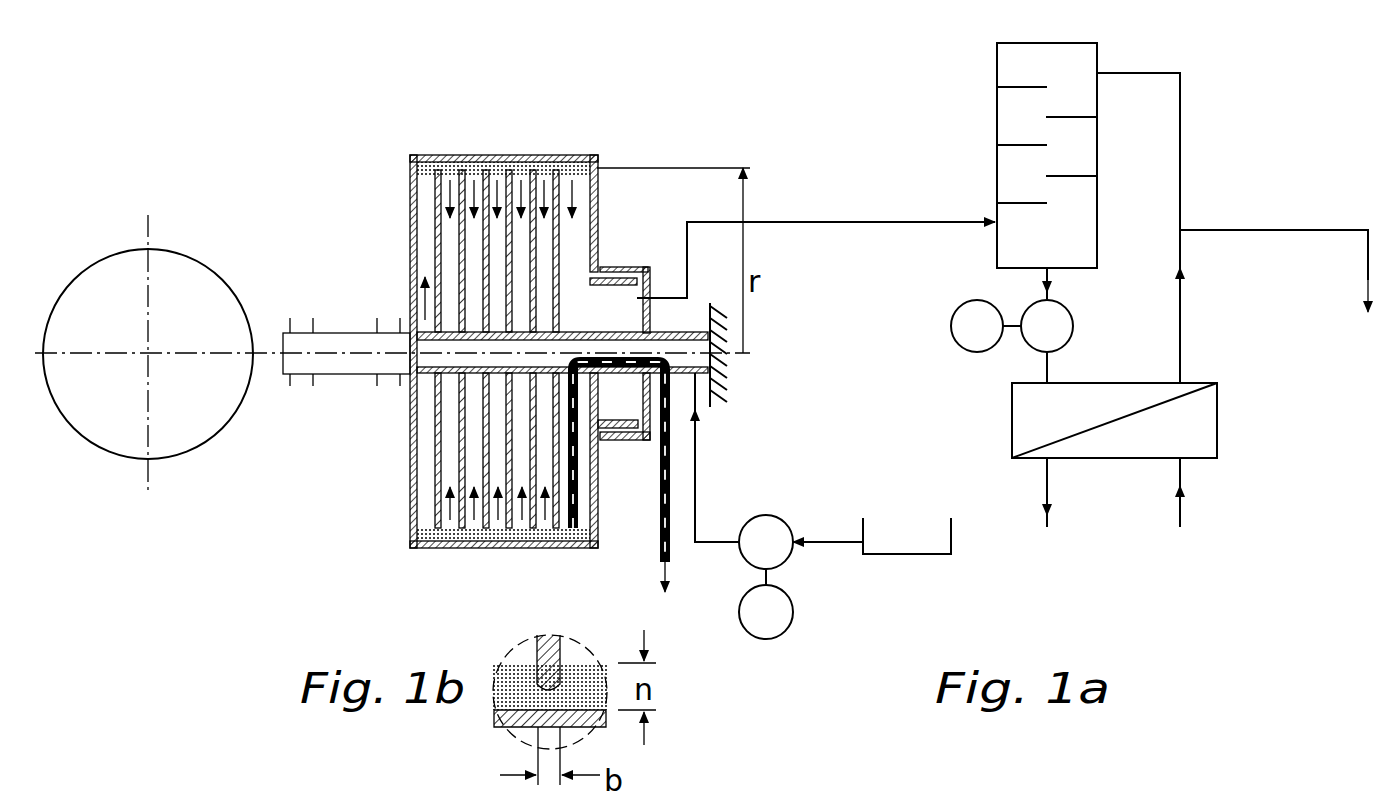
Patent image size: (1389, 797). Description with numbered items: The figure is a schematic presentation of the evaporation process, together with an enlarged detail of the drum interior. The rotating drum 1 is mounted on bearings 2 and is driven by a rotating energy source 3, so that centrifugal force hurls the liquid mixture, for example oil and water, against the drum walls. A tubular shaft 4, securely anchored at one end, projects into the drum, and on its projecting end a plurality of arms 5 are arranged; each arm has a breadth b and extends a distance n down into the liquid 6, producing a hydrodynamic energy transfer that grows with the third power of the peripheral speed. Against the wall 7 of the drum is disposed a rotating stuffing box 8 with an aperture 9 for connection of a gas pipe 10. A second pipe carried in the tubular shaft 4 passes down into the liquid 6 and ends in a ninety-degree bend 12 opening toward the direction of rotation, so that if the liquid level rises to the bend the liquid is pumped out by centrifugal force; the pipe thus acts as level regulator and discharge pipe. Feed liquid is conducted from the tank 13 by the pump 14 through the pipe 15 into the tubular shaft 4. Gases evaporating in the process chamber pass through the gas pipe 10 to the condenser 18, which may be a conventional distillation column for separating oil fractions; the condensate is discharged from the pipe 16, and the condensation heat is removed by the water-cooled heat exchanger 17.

In FIG. 1A, the rotating drum 1 is at (442, 157).
In FIG. 1A, the bearings 2 is at (303, 322).
In FIG. 1A, the rotating energy source 3 is at (180, 252).
In FIG. 1A, the tubular shaft 4 is at (690, 331).
In FIG. 1A, the arms 5 is at (435, 480).
In FIG. 1B, the arms 5 is at (556, 640).
In FIG. 1A, the liquid 6 is at (425, 550).
In FIG. 1B, the liquid 6 is at (497, 697).
In FIG. 1A, the wall 7 is at (619, 421).
In FIG. 1A, the rotating stuffing box 8 is at (627, 441).
In FIG. 1A, the aperture 9 is at (656, 298).
In FIG. 1A, the gas pipe 10 is at (821, 220).
In FIG. 1A, the 90° bend 12 is at (619, 477).
In FIG. 1A, the tank 13 is at (905, 528).
In FIG. 1A, the pump 14 is at (772, 516).
In FIG. 1A, the pipe 15 is at (696, 462).
In FIG. 1A, the pipe 16 is at (1283, 232).
In FIG. 1A, the heat exchanger 17 is at (1217, 422).
In FIG. 1A, the condenser 18 is at (997, 125).